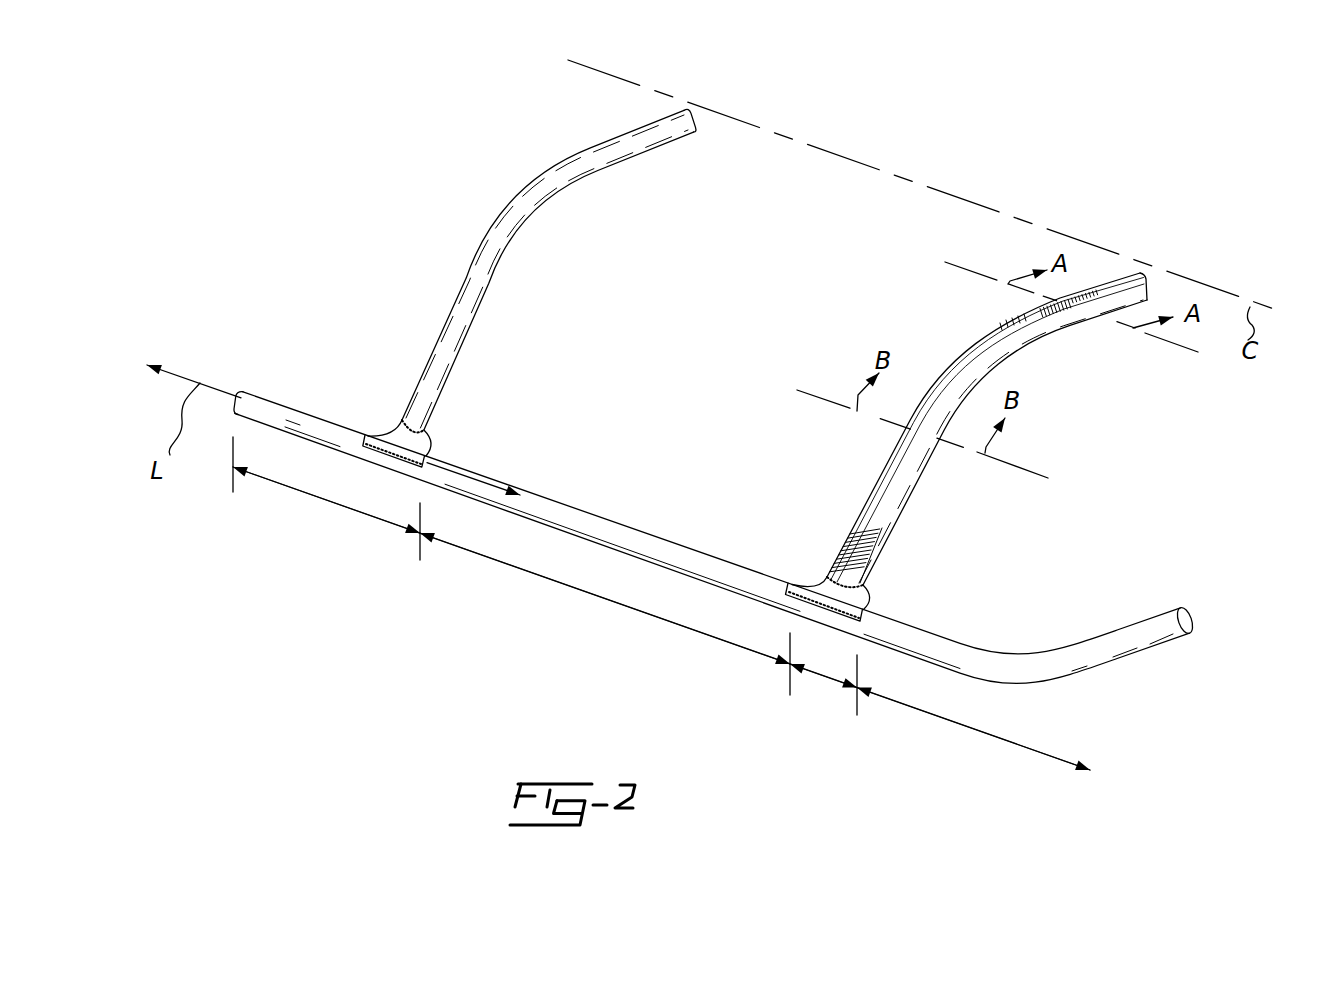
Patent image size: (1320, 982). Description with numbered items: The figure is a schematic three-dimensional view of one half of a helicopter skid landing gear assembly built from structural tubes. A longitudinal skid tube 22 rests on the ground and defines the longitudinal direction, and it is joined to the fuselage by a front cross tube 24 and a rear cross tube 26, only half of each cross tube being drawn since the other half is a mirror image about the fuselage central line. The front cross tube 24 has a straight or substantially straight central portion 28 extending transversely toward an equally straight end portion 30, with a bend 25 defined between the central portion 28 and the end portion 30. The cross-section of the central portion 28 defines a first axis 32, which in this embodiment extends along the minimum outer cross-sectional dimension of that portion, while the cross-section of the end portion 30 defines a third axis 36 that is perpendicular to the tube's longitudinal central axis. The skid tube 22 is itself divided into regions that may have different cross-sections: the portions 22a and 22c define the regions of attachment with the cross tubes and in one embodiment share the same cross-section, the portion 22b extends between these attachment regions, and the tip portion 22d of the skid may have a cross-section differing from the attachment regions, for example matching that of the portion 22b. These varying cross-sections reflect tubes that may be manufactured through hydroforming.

The skid tube 22 is at (527, 505).
The portion of skid tube 22a is at (335, 507).
The portion of skid tube 22b is at (600, 594).
The portion of skid tube 22c is at (832, 689).
The tip portion of skid 22d is at (968, 730).
The front cross tube 24 is at (985, 422).
The bend 25 is at (1010, 352).
The rear cross tube 26 is at (472, 227).
The central portion 28 is at (1062, 347).
The end portion 30 is at (910, 508).
The first axis 32 is at (1173, 347).
The third axis 36 is at (1023, 470).